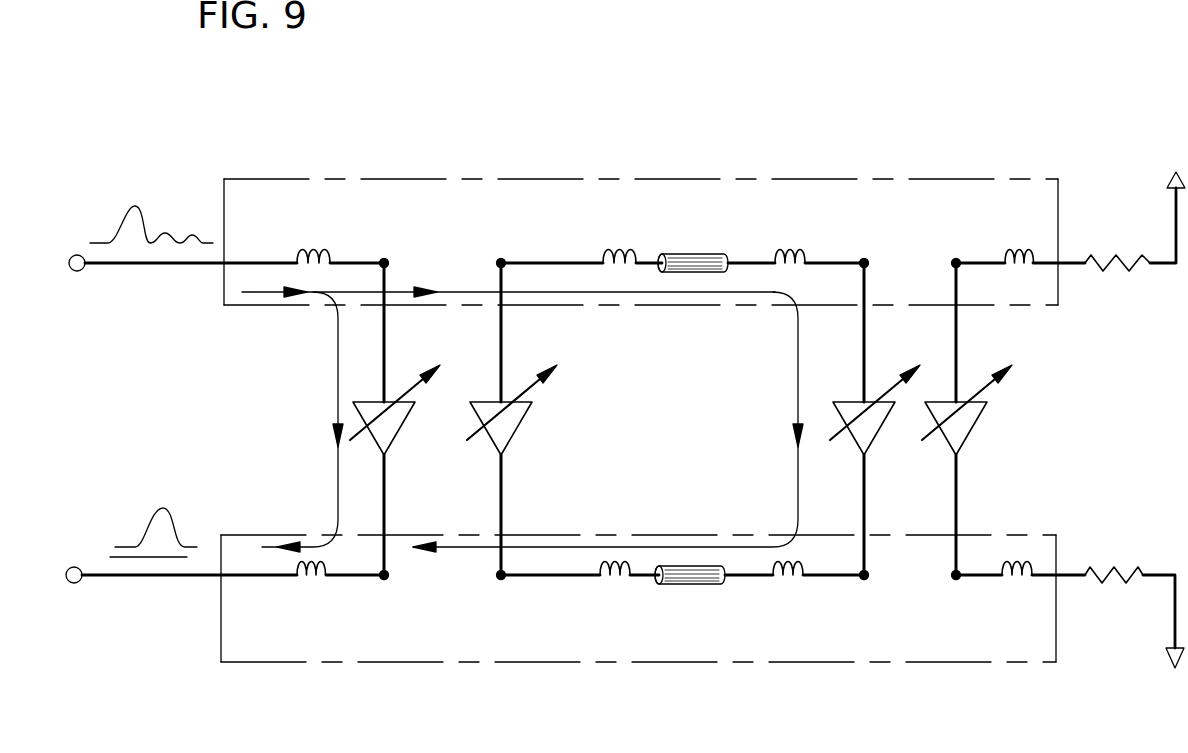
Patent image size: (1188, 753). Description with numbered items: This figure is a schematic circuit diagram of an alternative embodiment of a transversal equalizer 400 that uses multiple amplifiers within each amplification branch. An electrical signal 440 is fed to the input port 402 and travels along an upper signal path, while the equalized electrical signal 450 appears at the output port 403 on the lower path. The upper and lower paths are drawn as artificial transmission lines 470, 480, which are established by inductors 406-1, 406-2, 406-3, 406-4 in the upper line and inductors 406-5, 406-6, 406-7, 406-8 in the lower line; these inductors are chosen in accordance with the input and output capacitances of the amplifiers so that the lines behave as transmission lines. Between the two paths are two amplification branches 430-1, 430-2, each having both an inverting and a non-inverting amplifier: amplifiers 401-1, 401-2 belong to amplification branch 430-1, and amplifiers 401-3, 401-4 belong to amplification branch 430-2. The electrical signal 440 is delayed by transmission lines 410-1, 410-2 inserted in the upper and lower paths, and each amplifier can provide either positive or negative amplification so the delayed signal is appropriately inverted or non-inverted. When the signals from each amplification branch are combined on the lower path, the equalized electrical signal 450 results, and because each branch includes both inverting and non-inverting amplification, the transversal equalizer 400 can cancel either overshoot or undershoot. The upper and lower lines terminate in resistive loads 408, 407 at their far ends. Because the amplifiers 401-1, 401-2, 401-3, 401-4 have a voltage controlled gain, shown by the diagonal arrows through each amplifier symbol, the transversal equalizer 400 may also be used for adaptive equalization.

The transversal equalizer 400 is at (542, 153).
The input port 402 is at (72, 271).
The output port 403 is at (78, 584).
The terminating resistor 407 is at (1113, 568).
The terminating resistor 408 is at (1115, 260).
The electrical signal 440 is at (143, 207).
The equalized electrical signal 450 is at (165, 512).
The artificial transmission line 470 is at (393, 178).
The artificial transmission line 480 is at (425, 665).
The amplifier 401-1 is at (395, 420).
The amplifier 401-2 is at (512, 420).
The amplifier 401-3 is at (875, 425).
The amplifier 401-4 is at (967, 425).
The inductor 406-1 is at (320, 250).
The inductor 406-2 is at (617, 250).
The inductor 406-3 is at (790, 250).
The inductor 406-4 is at (1008, 250).
The inductor 406-5 is at (317, 588).
The inductor 406-6 is at (612, 582).
The inductor 406-7 is at (790, 586).
The inductor 406-8 is at (1018, 586).
The transmission line 410-1 is at (697, 254).
The transmission line 410-2 is at (685, 586).
The amplification branch 430-1 is at (336, 393).
The amplification branch 430-2 is at (797, 396).